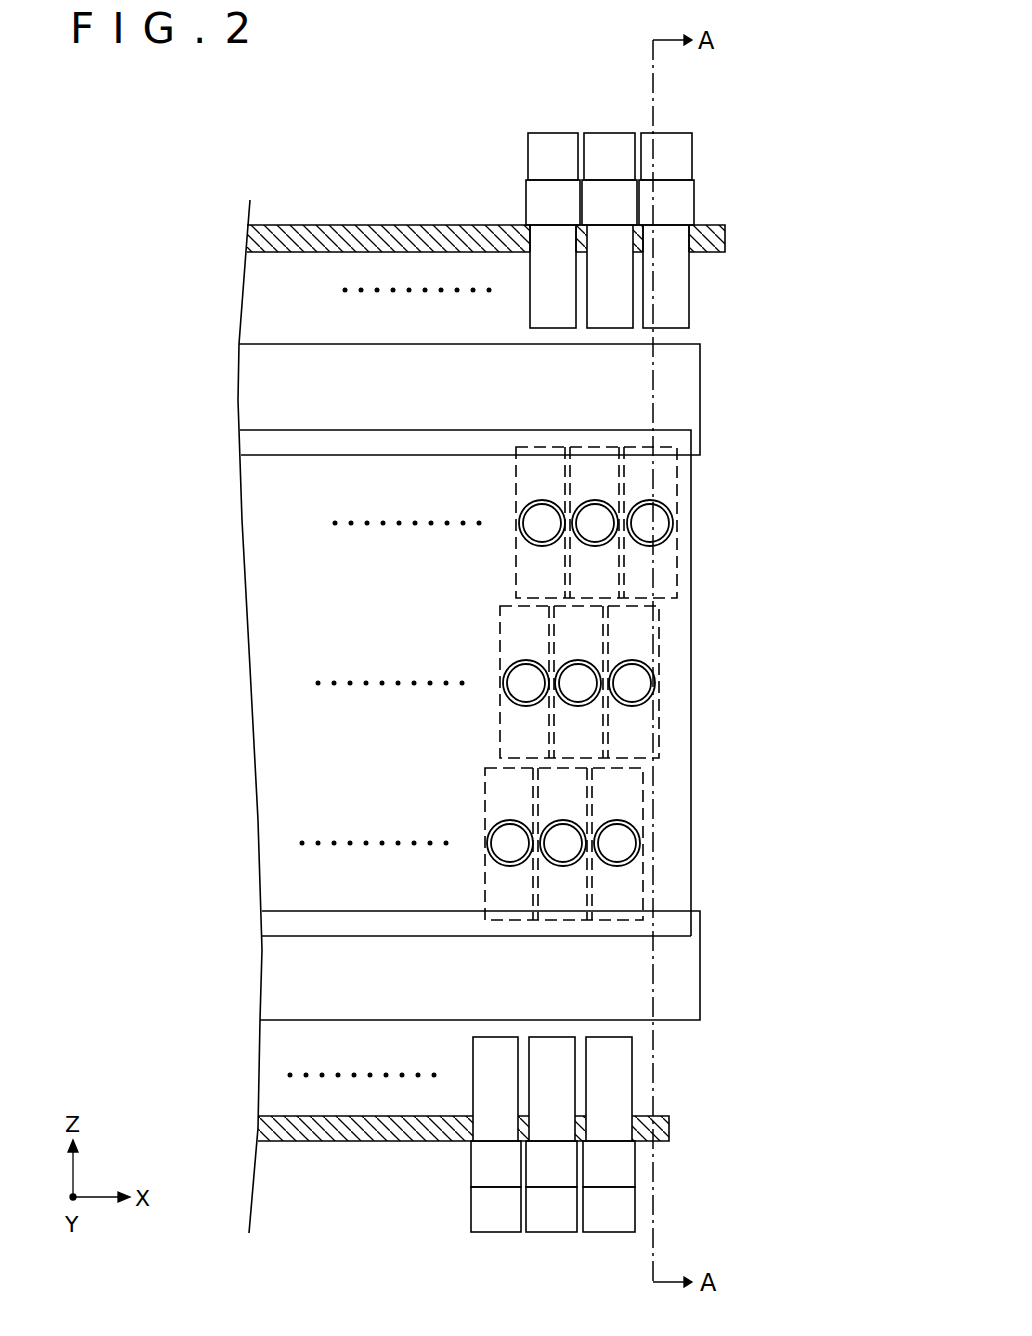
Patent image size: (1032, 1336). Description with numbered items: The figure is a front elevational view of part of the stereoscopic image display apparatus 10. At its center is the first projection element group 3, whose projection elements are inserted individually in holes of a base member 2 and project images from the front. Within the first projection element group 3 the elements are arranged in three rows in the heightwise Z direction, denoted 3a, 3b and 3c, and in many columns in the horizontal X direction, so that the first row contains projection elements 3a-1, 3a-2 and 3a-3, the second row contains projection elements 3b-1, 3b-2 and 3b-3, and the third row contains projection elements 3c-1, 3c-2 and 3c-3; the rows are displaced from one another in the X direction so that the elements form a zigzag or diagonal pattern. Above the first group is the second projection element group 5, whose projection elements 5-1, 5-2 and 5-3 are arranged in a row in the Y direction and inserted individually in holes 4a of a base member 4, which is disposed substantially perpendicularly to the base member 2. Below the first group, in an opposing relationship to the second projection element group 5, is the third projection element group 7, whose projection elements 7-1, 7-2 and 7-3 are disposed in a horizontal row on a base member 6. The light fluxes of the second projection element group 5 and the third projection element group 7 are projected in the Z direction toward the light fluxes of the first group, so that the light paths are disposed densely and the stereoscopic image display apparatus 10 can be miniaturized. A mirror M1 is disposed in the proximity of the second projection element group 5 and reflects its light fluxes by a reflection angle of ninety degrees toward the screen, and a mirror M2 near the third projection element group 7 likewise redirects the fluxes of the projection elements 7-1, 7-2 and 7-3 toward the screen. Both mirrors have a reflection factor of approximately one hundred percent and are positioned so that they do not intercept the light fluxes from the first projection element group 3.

The stereoscopic image display apparatus 10 is at (467, 106).
The base member 2 is at (262, 668).
The first projection element group 3 is at (595, 637).
The first row of projection elements 3a is at (625, 476).
The second row of projection elements 3b is at (582, 682).
The third row of projection elements 3c is at (573, 844).
The projection element 3a-1 is at (632, 447).
The projection element 3a-2 is at (580, 447).
The projection element 3a-3 is at (535, 447).
The projection element 3b-1 is at (618, 632).
The projection element 3b-2 is at (562, 651).
The projection element 3b-3 is at (502, 726).
The projection element 3c-1 is at (603, 793).
The projection element 3c-2 is at (547, 812).
The projection element 3c-3 is at (490, 887).
The base member 4 is at (247, 238).
The hole 4a is at (535, 238).
The second projection element group 5 is at (648, 205).
The projection element 5-1 is at (735, 328).
The projection element 5-2 is at (610, 140).
The projection element 5-3 is at (553, 140).
The base member 6 is at (258, 1129).
The third projection element group 7 is at (592, 1163).
The projection element 7-1 is at (607, 1228).
The projection element 7-2 is at (550, 1228).
The projection element 7-3 is at (494, 1228).
The mirror M1 is at (692, 392).
The mirror M2 is at (693, 976).